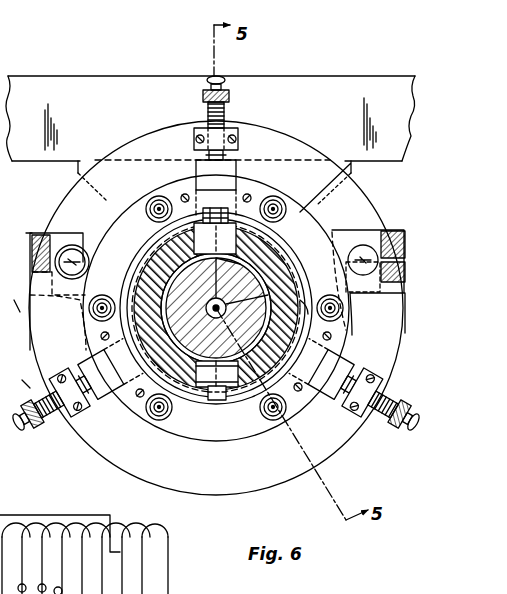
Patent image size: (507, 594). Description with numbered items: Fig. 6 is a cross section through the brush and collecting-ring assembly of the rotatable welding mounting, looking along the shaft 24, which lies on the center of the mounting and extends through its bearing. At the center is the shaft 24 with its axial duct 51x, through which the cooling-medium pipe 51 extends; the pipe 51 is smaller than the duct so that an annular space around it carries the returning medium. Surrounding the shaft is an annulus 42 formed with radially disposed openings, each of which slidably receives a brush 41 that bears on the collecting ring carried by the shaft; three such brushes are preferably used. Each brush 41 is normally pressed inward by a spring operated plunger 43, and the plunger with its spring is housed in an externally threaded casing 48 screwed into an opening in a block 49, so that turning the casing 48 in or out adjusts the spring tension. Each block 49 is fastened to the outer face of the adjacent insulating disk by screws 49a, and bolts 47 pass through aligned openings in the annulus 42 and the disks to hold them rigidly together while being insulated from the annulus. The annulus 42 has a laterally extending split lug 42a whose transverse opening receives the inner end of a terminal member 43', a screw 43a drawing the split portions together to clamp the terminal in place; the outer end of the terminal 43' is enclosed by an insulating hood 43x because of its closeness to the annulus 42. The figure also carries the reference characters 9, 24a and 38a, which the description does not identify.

The beam 9 is at (145, 84).
The shaft 24 is at (190, 387).
The bearing block part 24a is at (16, 237).
The shaft part 38a is at (15, 383).
The brush 41 is at (238, 184).
The annulus 42 is at (222, 422).
The lug 42a is at (354, 246).
The spring operated plunger 43 is at (216, 266).
The terminal member 43' is at (383, 236).
The screw 43a is at (399, 242).
The hood 43x is at (88, 268).
The bolts 47 is at (276, 206).
The casing 48 is at (203, 107).
The block 49 is at (230, 128).
The screws 49a is at (193, 140).
The pipe 51 is at (10, 296).
The duct 51x is at (309, 297).